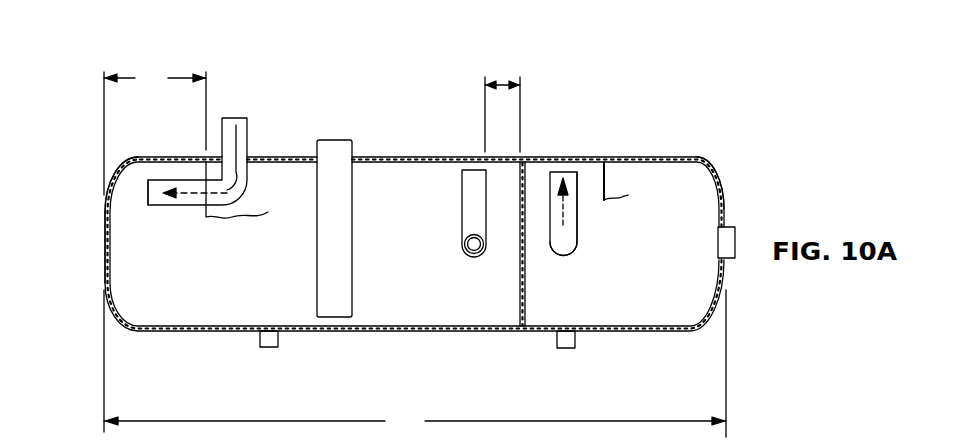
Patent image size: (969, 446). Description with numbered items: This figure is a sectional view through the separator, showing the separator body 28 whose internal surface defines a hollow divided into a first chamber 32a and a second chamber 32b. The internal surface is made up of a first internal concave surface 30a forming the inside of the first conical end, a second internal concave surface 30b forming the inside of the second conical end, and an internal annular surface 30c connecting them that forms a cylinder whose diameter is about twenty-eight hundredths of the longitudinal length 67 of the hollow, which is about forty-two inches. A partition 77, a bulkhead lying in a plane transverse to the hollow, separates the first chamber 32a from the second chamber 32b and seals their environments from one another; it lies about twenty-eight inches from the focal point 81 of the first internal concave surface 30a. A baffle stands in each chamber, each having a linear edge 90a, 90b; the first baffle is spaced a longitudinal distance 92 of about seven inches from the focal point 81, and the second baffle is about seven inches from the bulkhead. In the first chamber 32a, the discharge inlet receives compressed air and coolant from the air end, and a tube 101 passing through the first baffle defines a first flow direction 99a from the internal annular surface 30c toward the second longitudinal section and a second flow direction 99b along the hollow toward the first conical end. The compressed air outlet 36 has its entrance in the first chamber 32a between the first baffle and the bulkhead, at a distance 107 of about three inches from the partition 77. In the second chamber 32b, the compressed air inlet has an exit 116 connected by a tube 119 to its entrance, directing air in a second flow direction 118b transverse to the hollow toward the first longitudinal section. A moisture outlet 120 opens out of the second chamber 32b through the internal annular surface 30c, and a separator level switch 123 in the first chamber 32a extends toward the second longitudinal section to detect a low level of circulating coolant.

The separator body 28 is at (373, 155).
The first internal concave surface 30a is at (118, 195).
The second internal concave surface 30b is at (716, 187).
The internal annular surface 30c is at (245, 313).
The first chamber 32a is at (228, 258).
The second chamber 32b is at (620, 282).
The compressed air outlet 36 is at (462, 225).
The longitudinal length 67 is at (415, 363).
The partition 77 is at (525, 185).
The focal point 81 is at (112, 255).
The linear edge 90a is at (268, 212).
The linear edge 90b is at (628, 195).
The longitudinal distance 92 is at (155, 130).
The first flow direction 99a is at (248, 176).
The second flow direction 99b is at (190, 193).
The tube 101 is at (256, 184).
The distance 107 is at (502, 80).
The exit 116 is at (563, 168).
The second flow direction 118b is at (566, 226).
The tube 119 is at (578, 198).
The moisture outlet 120 is at (567, 350).
The separator level switch 123 is at (362, 275).